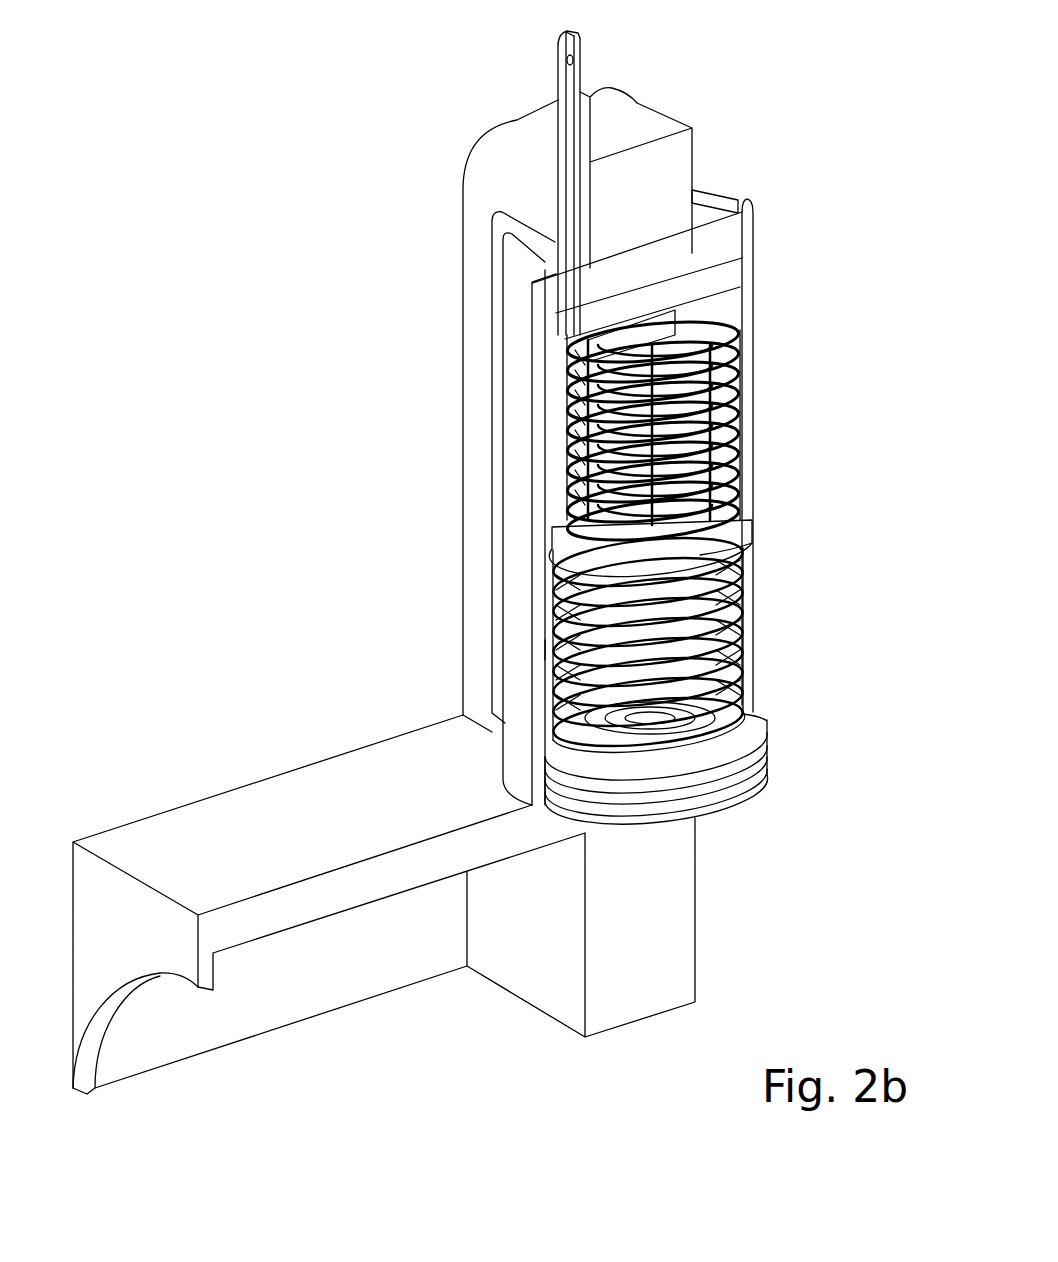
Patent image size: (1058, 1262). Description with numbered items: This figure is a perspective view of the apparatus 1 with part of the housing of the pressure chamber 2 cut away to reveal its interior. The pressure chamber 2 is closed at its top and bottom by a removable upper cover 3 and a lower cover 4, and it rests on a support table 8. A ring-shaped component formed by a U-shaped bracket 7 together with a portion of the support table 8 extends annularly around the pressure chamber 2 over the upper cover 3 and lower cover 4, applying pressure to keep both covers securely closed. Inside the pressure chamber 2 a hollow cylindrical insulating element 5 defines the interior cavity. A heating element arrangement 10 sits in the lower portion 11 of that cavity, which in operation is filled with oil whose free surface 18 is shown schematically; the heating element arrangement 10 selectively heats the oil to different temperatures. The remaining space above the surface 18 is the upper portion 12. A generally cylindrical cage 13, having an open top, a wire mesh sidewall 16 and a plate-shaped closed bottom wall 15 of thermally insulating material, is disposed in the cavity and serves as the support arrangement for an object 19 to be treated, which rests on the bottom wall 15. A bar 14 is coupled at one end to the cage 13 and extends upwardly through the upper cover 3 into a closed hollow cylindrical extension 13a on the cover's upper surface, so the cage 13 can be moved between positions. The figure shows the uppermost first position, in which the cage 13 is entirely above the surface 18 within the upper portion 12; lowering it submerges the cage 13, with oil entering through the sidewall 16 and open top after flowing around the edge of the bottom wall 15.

The apparatus 1 is at (307, 348).
The pressure chamber 2 is at (745, 222).
The upper cover 3 is at (713, 217).
The lower cover 4 is at (740, 772).
The insulating element 5 is at (548, 370).
The U-shaped bracket 7 is at (630, 105).
The support table 8 is at (265, 800).
The heating element arrangement 10 is at (745, 672).
The lower portion 11 is at (748, 633).
The upper portion 12 is at (755, 372).
The cage 13 is at (748, 420).
The extension 13a is at (580, 38).
The bar 14 is at (558, 97).
The bottom wall 15 is at (750, 525).
The wire mesh sidewall 16 is at (748, 458).
The surface of the oil 18 is at (740, 548).
The object 19 is at (650, 345).